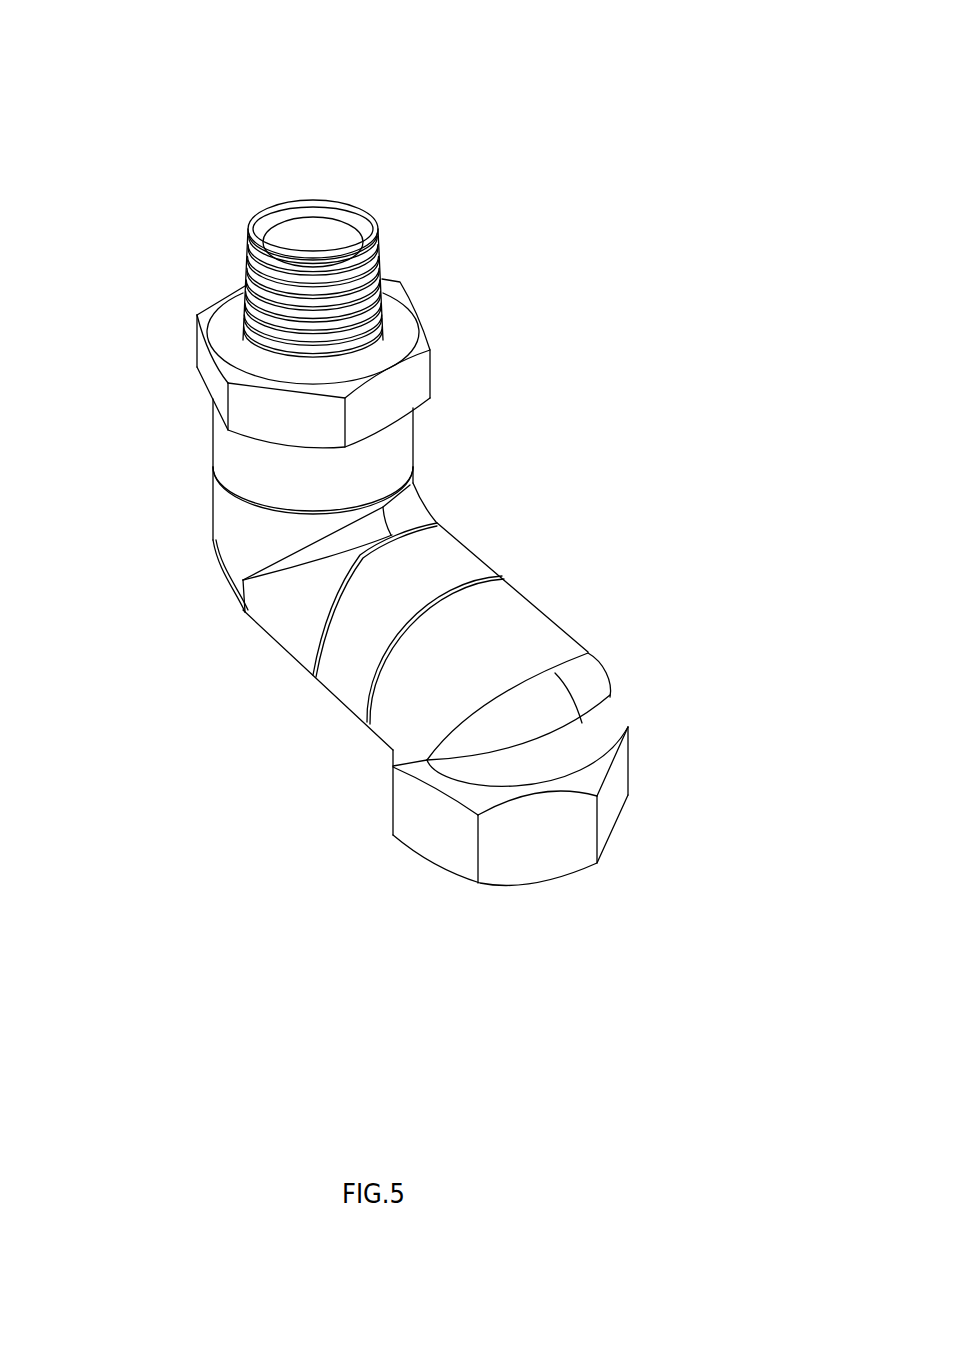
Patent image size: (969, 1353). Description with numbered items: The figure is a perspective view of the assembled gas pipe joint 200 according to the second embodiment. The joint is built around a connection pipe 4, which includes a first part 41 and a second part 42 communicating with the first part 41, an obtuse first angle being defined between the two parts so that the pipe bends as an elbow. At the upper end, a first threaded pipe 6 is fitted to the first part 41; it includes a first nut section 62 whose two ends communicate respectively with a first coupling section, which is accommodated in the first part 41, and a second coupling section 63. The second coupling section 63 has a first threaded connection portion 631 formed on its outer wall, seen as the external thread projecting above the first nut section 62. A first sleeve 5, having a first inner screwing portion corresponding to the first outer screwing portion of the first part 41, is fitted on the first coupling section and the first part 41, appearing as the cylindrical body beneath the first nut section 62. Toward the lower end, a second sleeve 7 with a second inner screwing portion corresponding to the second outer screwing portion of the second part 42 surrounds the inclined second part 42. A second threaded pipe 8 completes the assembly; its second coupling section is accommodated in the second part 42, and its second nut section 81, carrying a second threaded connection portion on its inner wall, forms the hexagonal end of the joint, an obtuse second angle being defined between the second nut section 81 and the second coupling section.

The gas pipe joint 200 is at (507, 97).
The first threaded pipe 6 is at (256, 220).
The second coupling section 63 is at (240, 227).
The first threaded connection portion 631 is at (388, 305).
The first nut section 62 is at (205, 345).
The first sleeve 5 is at (222, 440).
The connection pipe 4 is at (170, 633).
The first part 41 is at (222, 515).
The second part 42 is at (290, 637).
The second sleeve 7 is at (447, 552).
The second threaded pipe 8 is at (572, 637).
The second nut section 81 is at (393, 817).